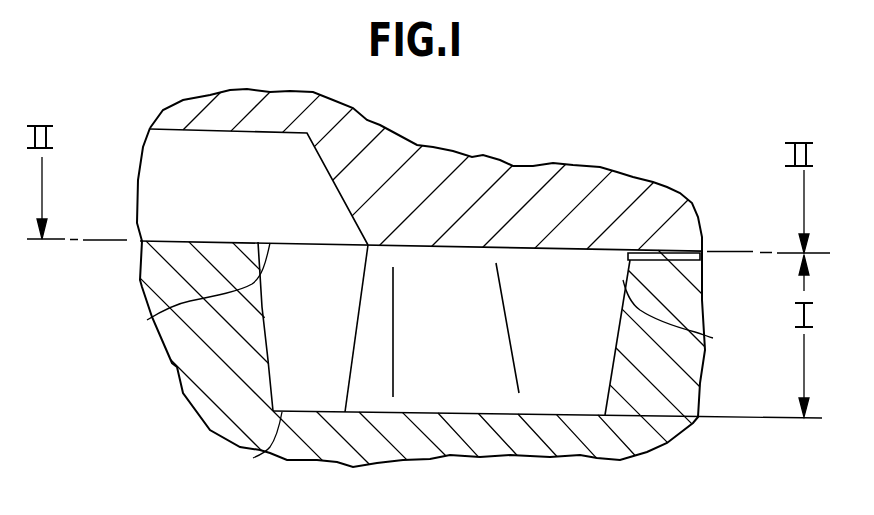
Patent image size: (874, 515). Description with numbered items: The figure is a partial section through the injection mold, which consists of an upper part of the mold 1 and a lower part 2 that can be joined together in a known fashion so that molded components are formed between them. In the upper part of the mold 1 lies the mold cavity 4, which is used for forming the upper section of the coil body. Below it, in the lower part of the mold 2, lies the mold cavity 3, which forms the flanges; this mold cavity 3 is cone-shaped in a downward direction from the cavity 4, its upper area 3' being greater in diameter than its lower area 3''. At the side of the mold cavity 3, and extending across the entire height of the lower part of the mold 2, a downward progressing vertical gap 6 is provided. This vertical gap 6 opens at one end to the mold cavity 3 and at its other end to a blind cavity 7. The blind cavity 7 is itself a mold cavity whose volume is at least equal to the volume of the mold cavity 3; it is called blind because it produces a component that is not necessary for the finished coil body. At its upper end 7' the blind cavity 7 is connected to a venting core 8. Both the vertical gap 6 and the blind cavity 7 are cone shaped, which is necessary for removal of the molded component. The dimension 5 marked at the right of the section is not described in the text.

The upper part of the mold 1 is at (487, 167).
The lower part of the mold 2 is at (485, 445).
The mold cavity 3 is at (313, 327).
The upper area of mold cavity 3' is at (194, 291).
The lower area of mold cavity 3'' is at (251, 451).
The mold cavity 4 is at (232, 207).
The gap dimension 5 is at (813, 255).
The vertical gap 6 is at (455, 348).
The blind cavity 7 is at (599, 337).
The upper end of blind cavity 7' is at (684, 319).
The venting core 8 is at (686, 257).